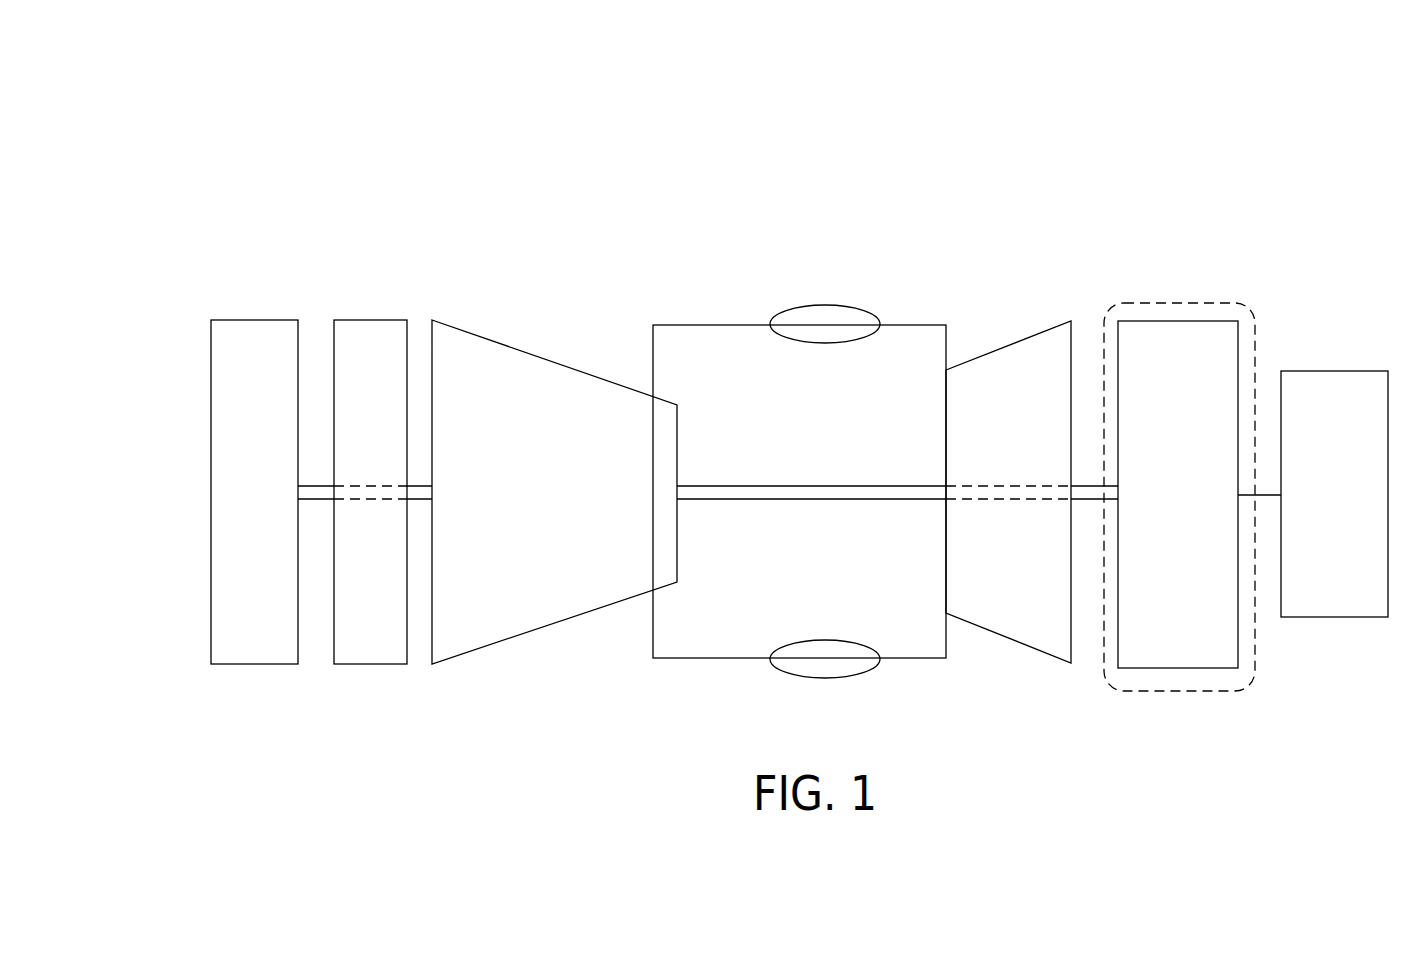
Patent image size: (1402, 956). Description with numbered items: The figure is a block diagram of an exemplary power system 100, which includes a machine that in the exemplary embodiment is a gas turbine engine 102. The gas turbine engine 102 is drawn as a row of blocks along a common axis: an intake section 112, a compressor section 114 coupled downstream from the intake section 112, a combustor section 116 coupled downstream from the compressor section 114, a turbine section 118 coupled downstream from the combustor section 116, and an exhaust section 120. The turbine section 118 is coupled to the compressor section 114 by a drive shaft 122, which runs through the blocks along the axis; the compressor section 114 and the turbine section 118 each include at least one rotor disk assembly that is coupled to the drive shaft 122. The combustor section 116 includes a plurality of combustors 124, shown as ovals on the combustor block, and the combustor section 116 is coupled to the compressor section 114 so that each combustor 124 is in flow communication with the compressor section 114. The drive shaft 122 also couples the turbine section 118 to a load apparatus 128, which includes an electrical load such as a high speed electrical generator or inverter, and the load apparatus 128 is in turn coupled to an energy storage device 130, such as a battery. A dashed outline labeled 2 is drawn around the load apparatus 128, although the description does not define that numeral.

The power system 100 is at (318, 159).
The gas turbine engine 102 is at (914, 132).
The intake section 112 is at (372, 320).
The compressor section 114 is at (448, 323).
The combustor section 116 is at (944, 267).
The turbine section 118 is at (1037, 334).
The exhaust section 120 is at (211, 347).
The drive shaft 122 is at (805, 486).
The combustors 124 is at (837, 305).
The load apparatus 128 is at (1183, 321).
The energy storage device 130 is at (1305, 371).
The clutch assembly 2 is at (1247, 304).